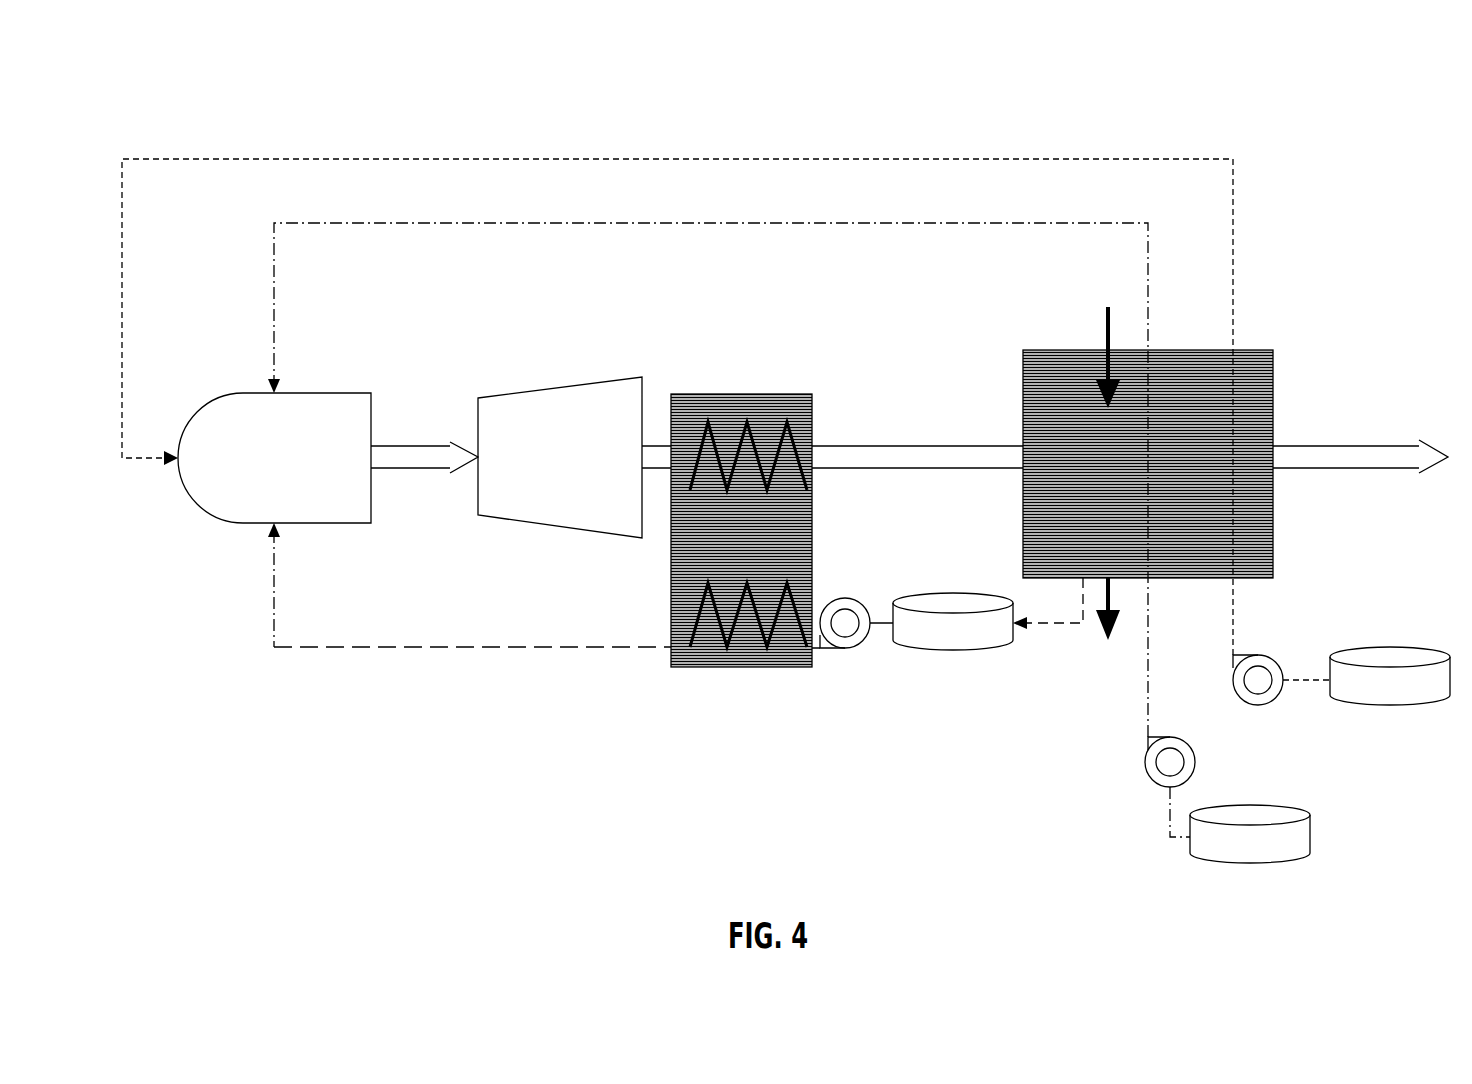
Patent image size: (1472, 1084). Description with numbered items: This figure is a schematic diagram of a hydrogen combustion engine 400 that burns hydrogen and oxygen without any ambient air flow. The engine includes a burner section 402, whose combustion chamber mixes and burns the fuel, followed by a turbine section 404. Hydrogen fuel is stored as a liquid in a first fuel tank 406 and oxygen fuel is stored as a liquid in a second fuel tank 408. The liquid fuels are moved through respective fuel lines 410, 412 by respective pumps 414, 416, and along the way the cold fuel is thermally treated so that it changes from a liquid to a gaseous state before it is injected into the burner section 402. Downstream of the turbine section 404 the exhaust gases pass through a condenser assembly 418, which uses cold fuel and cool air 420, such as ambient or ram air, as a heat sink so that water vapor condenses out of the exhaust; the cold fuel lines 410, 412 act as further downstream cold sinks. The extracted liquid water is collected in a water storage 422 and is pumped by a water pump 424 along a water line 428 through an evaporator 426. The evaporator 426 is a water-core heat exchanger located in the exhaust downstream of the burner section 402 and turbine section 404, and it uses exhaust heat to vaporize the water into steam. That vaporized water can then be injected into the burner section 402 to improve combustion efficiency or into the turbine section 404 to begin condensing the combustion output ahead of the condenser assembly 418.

The hydrogen combustion engine 400 is at (162, 82).
The burner section 402 is at (305, 523).
The turbine section 404 is at (560, 522).
The first fuel tank 406 is at (1392, 707).
The second fuel tank 408 is at (1250, 865).
The fuel line 410 is at (555, 158).
The fuel line 412 is at (742, 222).
The pump 414 is at (1258, 706).
The pump 416 is at (1144, 762).
The condenser assembly 418 is at (1274, 380).
The cool air 420 is at (1104, 330).
The water storage 422 is at (953, 652).
The water pump 424 is at (845, 650).
The evaporator 426 is at (718, 668).
The water line 428 is at (485, 648).